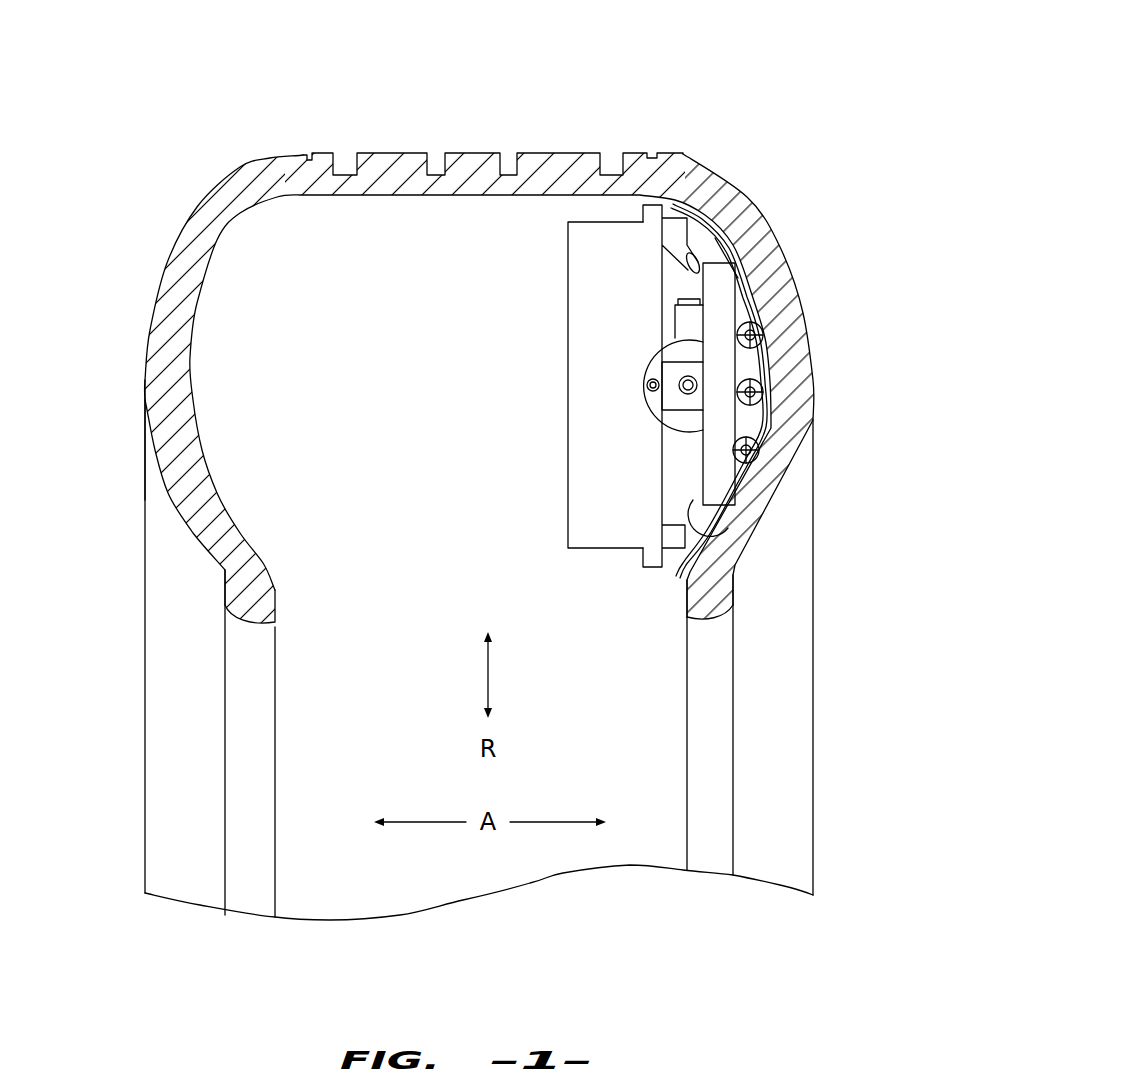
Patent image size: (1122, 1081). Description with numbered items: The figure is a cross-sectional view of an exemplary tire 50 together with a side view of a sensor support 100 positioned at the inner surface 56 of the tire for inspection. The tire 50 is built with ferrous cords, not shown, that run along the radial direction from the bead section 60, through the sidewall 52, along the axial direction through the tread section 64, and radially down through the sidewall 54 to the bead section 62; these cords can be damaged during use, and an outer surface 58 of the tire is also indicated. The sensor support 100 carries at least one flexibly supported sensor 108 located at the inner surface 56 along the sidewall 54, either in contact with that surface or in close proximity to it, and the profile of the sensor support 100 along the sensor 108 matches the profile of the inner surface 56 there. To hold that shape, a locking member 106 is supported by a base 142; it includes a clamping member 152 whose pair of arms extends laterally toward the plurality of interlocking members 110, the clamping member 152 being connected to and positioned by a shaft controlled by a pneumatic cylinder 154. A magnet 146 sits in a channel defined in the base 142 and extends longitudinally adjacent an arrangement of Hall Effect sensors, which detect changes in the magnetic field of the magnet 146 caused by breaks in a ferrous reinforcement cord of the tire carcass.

The tire 50 is at (673, 92).
The sidewall 52 is at (182, 298).
The sidewall 54 is at (772, 273).
The inner surface 56 is at (192, 377).
The outer surface of tire 58 is at (141, 377).
The bead section 60 is at (290, 582).
The bead section 62 is at (669, 610).
The tread section 64 is at (500, 168).
The sensor support 100 is at (664, 373).
The locking member 106 is at (657, 437).
The flexibly supported sensor 108 is at (688, 570).
The interlocking members 110 is at (764, 345).
The base 142 is at (665, 285).
The magnet 146 is at (674, 226).
The clamping member 152 is at (714, 280).
The pneumatic cylinder 154 is at (684, 427).